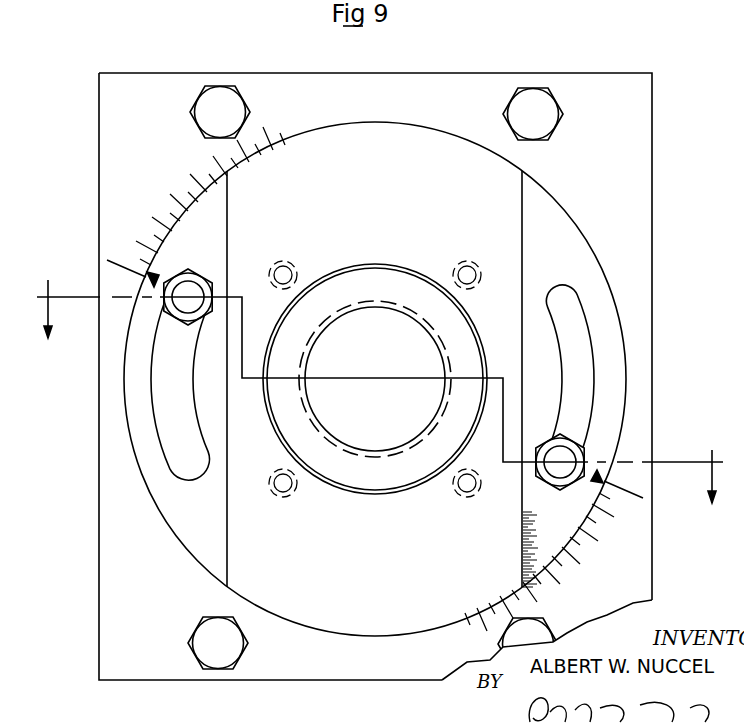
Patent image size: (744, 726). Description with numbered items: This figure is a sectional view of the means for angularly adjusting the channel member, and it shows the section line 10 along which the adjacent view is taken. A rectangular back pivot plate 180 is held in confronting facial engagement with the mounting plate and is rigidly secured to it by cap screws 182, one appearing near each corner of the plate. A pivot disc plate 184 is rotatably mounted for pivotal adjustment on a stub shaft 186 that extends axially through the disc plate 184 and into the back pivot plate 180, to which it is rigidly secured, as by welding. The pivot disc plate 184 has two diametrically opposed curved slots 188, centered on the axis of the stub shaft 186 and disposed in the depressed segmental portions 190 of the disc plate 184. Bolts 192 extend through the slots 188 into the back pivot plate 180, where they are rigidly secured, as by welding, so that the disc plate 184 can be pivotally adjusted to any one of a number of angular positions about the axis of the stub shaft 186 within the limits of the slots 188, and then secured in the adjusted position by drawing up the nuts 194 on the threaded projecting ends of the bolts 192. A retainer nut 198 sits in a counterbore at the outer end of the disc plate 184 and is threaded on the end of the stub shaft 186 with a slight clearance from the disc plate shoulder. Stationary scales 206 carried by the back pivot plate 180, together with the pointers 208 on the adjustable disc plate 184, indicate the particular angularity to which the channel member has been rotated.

The section line 10 is at (380, 377).
The back pivot plate 180 is at (655, 127).
The cap screws 182 is at (218, 102).
The pivot disc plate 184 is at (565, 208).
The stub shaft 186 is at (388, 305).
The curved slots 188 is at (585, 310).
The depressed segmental portions 190 is at (567, 242).
The bolts 192 is at (200, 292).
The nuts 194 is at (198, 323).
The retainer nut 198 is at (398, 475).
The stationary scales 206 is at (152, 223).
The pointers 208 is at (157, 275).